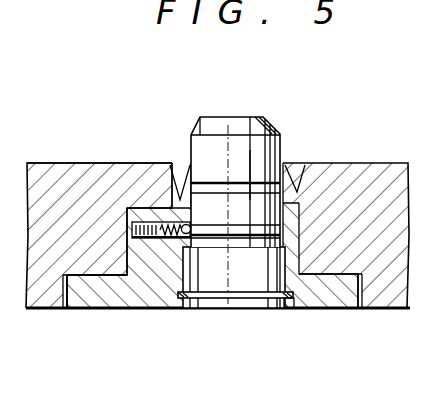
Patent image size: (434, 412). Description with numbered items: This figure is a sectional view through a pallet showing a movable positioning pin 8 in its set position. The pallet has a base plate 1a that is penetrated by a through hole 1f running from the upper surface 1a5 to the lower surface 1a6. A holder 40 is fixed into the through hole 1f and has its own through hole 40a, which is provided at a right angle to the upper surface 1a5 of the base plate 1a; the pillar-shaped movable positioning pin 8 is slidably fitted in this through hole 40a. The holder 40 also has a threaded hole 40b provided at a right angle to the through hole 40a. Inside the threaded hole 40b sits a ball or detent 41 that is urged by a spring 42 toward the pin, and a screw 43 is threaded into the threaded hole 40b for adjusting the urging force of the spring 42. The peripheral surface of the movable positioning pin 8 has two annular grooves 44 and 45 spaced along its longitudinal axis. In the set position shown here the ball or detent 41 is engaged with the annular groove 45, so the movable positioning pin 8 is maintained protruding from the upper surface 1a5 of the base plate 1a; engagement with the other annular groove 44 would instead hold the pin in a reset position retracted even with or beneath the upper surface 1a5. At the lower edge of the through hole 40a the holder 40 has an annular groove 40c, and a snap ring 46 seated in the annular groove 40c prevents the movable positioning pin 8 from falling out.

The base plate 1a is at (384, 163).
The upper surface 1a5 is at (62, 163).
The lower surface 1a6 is at (37, 311).
The through hole 1f is at (301, 207).
The movable positioning pin 8 is at (252, 128).
The holder 40 is at (212, 218).
The through hole 40a is at (192, 165).
The threaded hole 40b is at (160, 262).
The annular groove 40c is at (192, 310).
The ball or detent 41 is at (184, 224).
The spring 42 is at (156, 223).
The screw 43 is at (131, 309).
The annular groove 44 is at (255, 162).
The annular groove 45 is at (242, 230).
The snap ring 46 is at (293, 309).